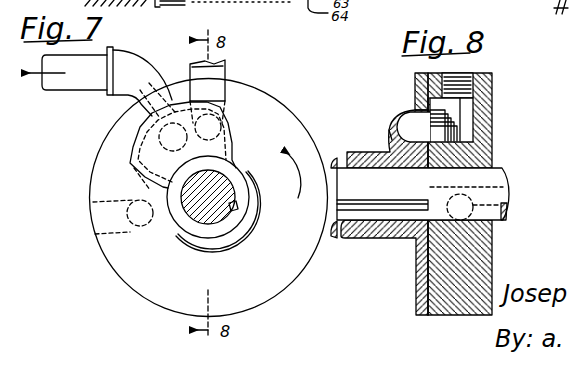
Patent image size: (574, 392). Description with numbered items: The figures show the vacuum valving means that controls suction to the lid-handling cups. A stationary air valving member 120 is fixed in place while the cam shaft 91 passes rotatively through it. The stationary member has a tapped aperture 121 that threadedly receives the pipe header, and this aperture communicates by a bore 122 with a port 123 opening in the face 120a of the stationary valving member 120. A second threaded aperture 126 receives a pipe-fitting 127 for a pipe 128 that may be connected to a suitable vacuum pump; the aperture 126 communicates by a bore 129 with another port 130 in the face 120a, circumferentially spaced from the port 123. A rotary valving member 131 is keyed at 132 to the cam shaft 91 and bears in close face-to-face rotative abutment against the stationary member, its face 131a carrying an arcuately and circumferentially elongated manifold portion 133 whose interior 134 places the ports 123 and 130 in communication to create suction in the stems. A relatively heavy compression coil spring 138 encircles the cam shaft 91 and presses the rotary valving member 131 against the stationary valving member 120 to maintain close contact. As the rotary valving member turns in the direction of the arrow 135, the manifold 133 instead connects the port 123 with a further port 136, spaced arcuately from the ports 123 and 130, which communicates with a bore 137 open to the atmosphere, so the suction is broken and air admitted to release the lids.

In FIG. 7, the cam shaft 91 is at (195, 213).
In FIG. 8, the cam shaft 91 is at (504, 171).
In FIG. 8, the stationary air valving member 120 is at (496, 136).
In FIG. 8, the face of the stationary valving member 120a is at (429, 318).
In FIG. 8, the tapped aperture 121 is at (468, 86).
In FIG. 8, the bore 122 is at (472, 111).
In FIG. 7, the port 123 is at (222, 118).
In FIG. 8, the port 123 is at (427, 112).
In FIG. 7, the threaded aperture 126 is at (152, 118).
In FIG. 7, the pipe-fitting 127 is at (143, 82).
In FIG. 7, the pipe 128 is at (63, 85).
In FIG. 7, the bore 129 is at (150, 132).
In FIG. 7, the port 130 is at (140, 150).
In FIG. 7, the rotary valving member 131 is at (153, 292).
In FIG. 8, the rotary valving member 131 is at (421, 283).
In FIG. 8, the face of the rotary valving member 131a is at (433, 284).
In FIG. 7, the key 132 is at (236, 213).
In FIG. 8, the key 132 is at (373, 221).
In FIG. 7, the manifold portion 133 is at (136, 168).
In FIG. 8, the manifold portion 133 is at (396, 120).
In FIG. 7, the interior of the manifold portion 134 is at (150, 180).
In FIG. 8, the interior of the manifold portion 134 is at (400, 117).
In FIG. 7, the arrow 135 is at (307, 166).
In FIG. 7, the port 136 is at (142, 227).
In FIG. 8, the port 136 is at (506, 188).
In FIG. 7, the bore 137 is at (112, 215).
In FIG. 8, the bore 137 is at (509, 206).
In FIG. 8, the compression coil spring 138 is at (340, 238).